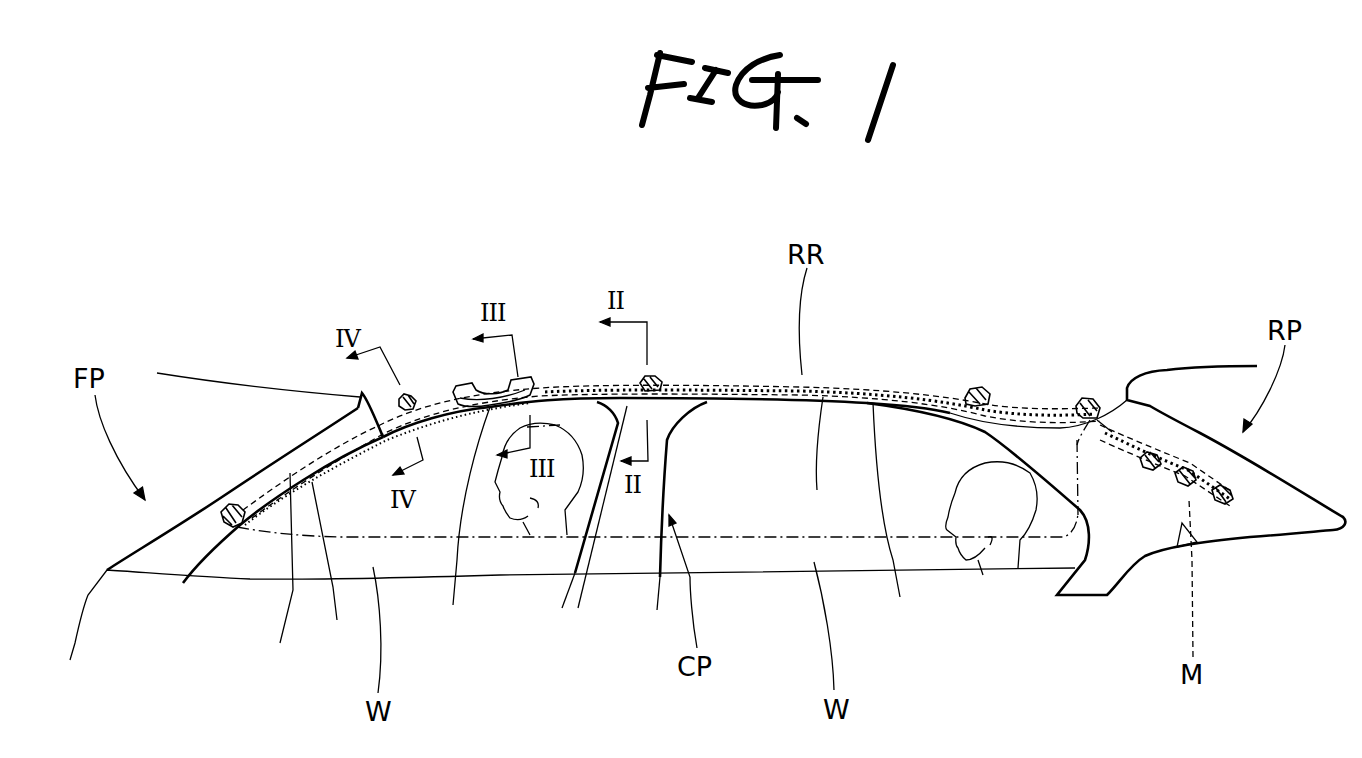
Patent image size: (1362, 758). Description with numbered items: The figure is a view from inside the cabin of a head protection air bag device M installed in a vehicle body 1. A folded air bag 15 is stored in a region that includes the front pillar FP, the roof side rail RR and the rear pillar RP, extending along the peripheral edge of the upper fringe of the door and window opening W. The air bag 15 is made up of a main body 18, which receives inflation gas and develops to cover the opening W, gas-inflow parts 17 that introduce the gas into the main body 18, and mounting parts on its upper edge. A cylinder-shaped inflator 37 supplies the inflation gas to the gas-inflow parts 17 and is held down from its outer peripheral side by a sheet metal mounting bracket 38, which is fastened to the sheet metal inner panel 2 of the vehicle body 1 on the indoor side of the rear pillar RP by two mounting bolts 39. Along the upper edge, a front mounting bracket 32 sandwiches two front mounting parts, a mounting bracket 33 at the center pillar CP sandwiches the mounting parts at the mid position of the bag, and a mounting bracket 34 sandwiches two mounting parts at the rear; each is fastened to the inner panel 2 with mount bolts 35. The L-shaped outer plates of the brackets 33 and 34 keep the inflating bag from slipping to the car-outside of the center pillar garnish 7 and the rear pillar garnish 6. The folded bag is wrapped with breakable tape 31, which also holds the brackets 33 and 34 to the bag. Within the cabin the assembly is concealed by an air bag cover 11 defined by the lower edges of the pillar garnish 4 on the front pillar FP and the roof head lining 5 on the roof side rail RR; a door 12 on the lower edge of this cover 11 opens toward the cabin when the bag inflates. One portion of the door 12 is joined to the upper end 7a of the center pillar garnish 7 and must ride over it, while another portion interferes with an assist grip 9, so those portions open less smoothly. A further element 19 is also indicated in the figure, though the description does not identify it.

The vehicle body 1 is at (707, 467).
The inner panel 2 is at (315, 442).
The pillar garnish 4 is at (287, 458).
The roof head lining 5 is at (852, 378).
The rear pillar garnish 6 is at (1113, 527).
The center pillar garnish 7 is at (613, 506).
The upper end of center pillar garnish 7a is at (564, 629).
The assist grip 9 is at (478, 380).
The air bag cover 11 is at (574, 523).
The door 12 is at (665, 390).
The air bag 15 is at (907, 380).
The gas-inflow part 17 is at (1158, 438).
The main body 18 is at (765, 520).
The front pillar trim 19 is at (512, 520).
The tape 31 is at (415, 395).
The mounting bracket 32 is at (402, 393).
The mounting bracket 33 is at (657, 367).
The mounting bracket 34 is at (991, 390).
The mount bolt 35 is at (220, 510).
The inflator 37 is at (1197, 503).
The mounting bracket 38 is at (1177, 500).
The mounting bolt 39 is at (1188, 470).